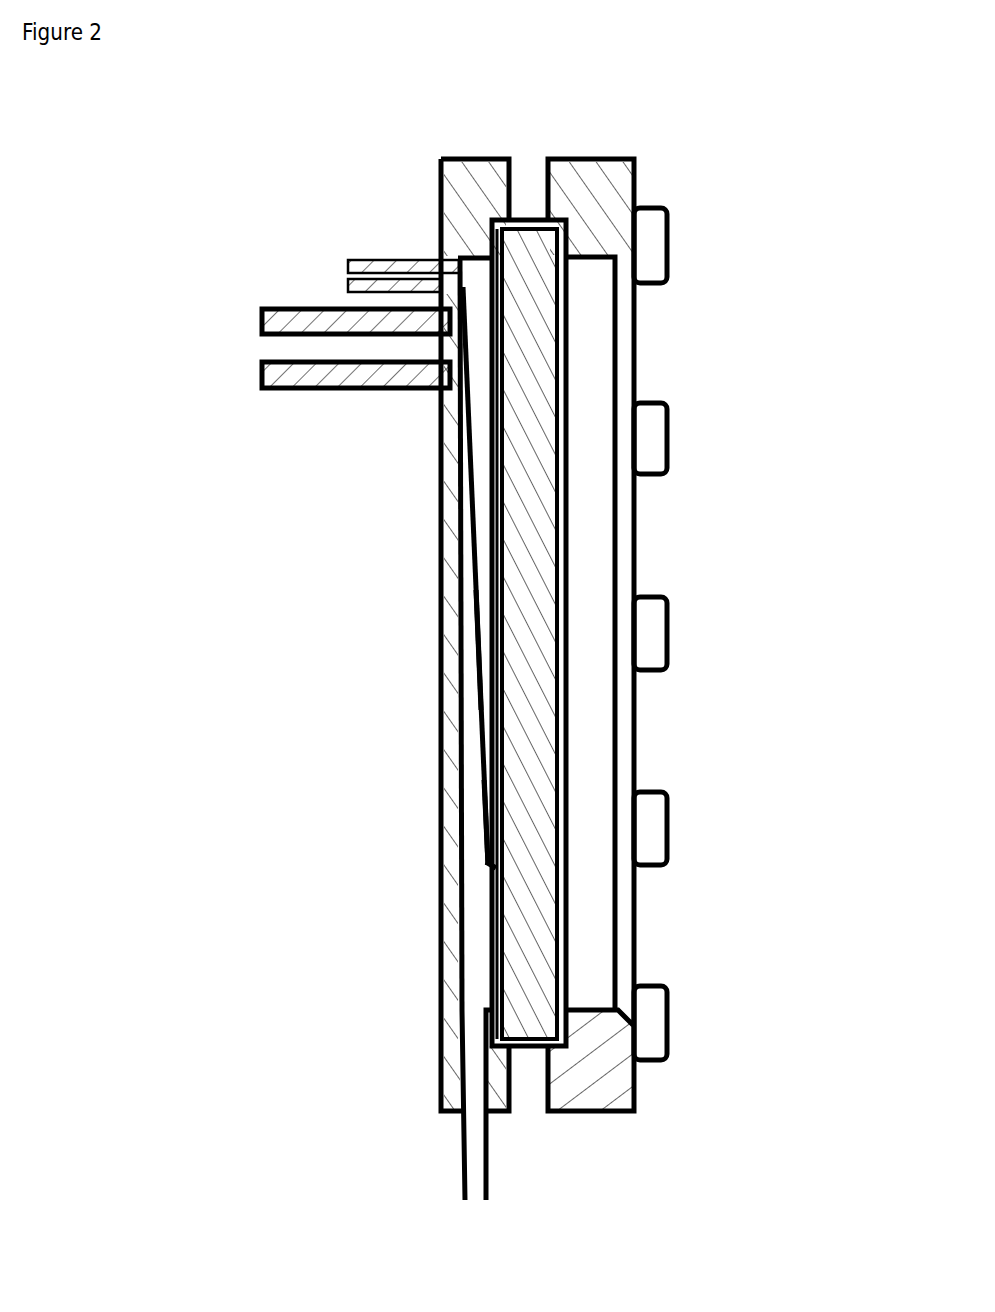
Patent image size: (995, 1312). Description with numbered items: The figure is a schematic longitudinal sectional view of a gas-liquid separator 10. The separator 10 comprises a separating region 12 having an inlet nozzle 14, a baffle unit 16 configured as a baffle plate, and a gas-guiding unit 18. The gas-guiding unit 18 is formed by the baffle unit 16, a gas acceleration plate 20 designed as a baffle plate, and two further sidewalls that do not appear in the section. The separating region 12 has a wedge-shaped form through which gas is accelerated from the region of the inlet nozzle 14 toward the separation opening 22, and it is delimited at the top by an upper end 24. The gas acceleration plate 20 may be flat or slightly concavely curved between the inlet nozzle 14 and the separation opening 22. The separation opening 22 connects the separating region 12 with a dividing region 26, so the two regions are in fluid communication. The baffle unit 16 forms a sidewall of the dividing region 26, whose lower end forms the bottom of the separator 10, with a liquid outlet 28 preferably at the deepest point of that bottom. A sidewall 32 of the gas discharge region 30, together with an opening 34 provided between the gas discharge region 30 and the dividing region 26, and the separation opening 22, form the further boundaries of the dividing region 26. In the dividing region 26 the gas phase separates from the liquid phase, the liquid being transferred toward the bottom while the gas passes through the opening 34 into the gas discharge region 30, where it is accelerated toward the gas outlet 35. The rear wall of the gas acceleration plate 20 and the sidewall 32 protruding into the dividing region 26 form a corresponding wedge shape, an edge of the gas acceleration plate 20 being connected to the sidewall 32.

The gas-liquid separator 10 is at (778, 459).
The separating region 12 is at (481, 357).
The inlet nozzle 14 is at (452, 266).
The baffle unit 16 is at (494, 282).
The gas-guiding unit 18 is at (496, 425).
The gas acceleration plate 20 is at (470, 505).
The separation opening 22 is at (494, 866).
The upper end 24 is at (477, 255).
The dividing region 26 is at (480, 922).
The liquid outlet 28 is at (477, 1013).
The gas discharge region 30 is at (470, 673).
The sidewall 32 is at (455, 765).
The opening 34 is at (477, 863).
The gas outlet 35 is at (449, 353).